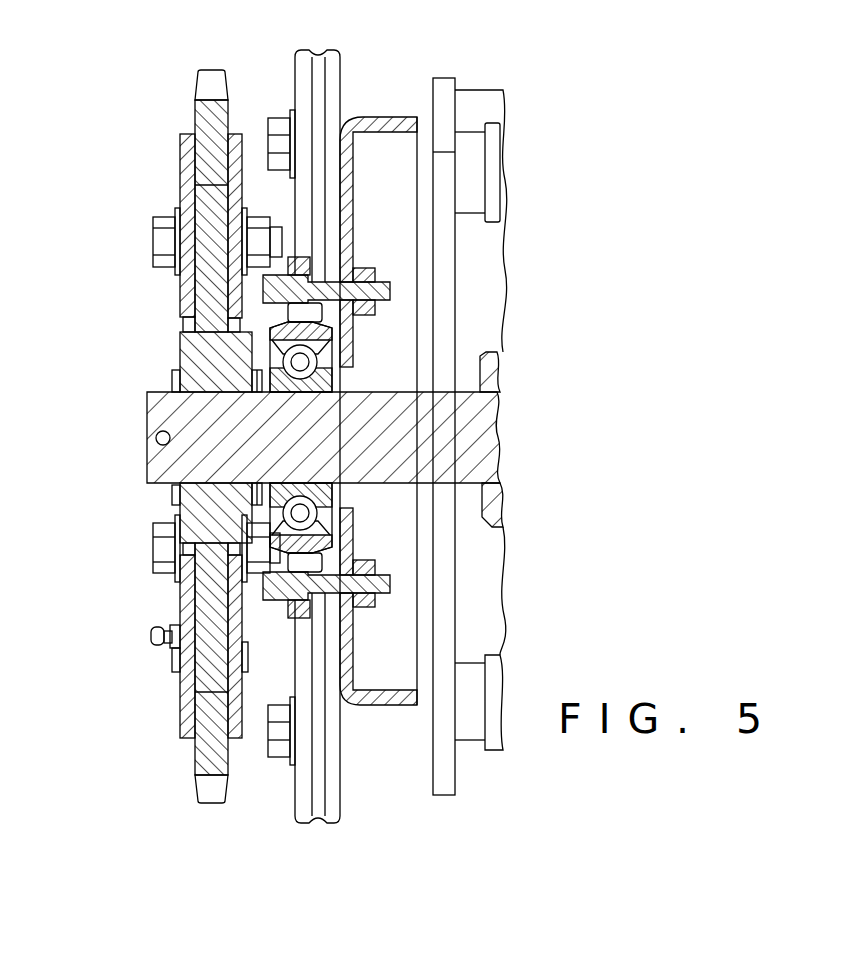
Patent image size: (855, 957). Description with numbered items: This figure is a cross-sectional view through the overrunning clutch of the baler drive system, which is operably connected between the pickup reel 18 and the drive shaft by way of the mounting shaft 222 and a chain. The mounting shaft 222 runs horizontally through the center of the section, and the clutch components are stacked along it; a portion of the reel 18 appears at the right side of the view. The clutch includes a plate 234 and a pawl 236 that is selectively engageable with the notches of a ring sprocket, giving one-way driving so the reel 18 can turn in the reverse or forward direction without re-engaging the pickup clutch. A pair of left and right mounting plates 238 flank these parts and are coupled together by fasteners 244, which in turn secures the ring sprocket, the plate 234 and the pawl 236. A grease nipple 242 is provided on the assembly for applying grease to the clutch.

The pickup reel 18 is at (484, 775).
The mounting shaft 222 is at (158, 174).
The plate 234 is at (187, 357).
The pawl 236 is at (172, 665).
The left and right mounting plates 238 is at (240, 740).
The grease nipple 242 is at (152, 637).
The fasteners 244 is at (160, 240).